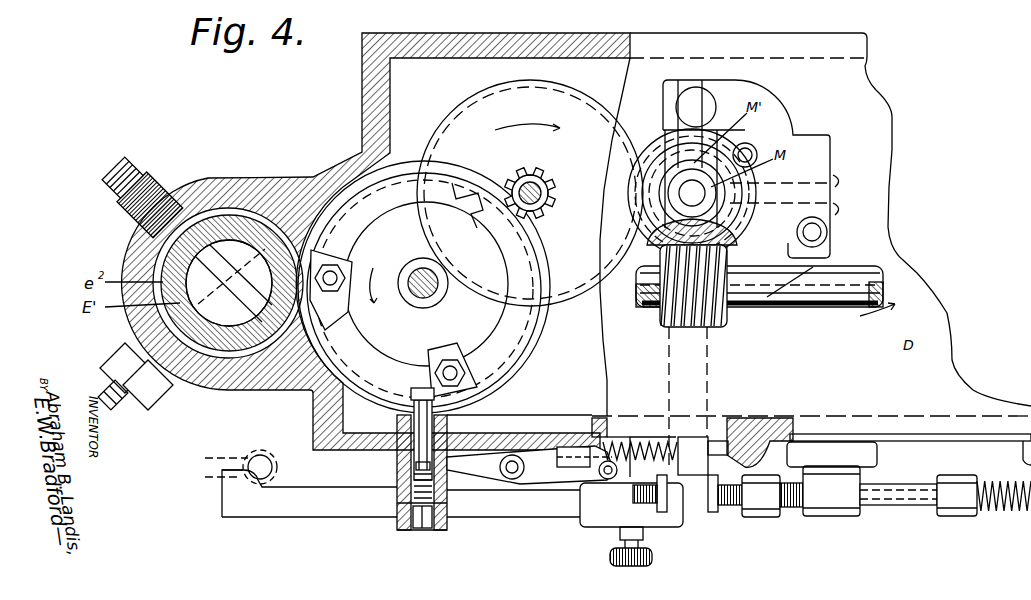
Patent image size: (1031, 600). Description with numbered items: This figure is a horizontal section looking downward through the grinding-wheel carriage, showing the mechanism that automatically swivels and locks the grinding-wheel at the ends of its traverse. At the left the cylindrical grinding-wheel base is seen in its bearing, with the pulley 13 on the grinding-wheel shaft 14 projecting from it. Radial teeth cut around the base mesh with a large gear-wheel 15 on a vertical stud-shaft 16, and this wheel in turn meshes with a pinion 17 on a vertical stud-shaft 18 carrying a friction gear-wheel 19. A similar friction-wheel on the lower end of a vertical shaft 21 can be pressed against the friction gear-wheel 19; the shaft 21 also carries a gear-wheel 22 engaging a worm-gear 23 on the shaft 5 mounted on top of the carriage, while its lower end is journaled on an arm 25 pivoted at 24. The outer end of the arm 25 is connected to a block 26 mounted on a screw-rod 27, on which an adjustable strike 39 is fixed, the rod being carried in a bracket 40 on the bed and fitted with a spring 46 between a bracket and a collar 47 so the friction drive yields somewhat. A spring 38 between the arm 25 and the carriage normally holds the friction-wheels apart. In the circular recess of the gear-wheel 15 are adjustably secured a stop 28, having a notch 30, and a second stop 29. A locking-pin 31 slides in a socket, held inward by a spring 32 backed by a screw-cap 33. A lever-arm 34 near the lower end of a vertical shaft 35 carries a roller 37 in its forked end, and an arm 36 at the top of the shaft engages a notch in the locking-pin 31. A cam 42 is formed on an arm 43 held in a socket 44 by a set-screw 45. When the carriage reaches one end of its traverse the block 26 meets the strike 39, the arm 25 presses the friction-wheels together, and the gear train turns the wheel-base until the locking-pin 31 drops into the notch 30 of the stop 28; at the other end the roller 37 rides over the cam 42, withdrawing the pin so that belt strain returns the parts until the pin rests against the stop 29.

The shaft 5 is at (878, 265).
The pulley 13 is at (160, 172).
The grinding-wheel shaft 14 is at (113, 167).
The gear-wheel 15 is at (443, 292).
The vertical stud-shaft 16 is at (433, 300).
The pinion 17 is at (545, 175).
The vertical stud-shaft 18 is at (541, 197).
The friction gear-wheel 19 is at (577, 108).
The vertical shaft 21 is at (690, 193).
The gear-wheel 22 is at (648, 238).
The worm-gear 23 is at (723, 315).
The pivot 24 is at (692, 113).
The arm 25 is at (845, 386).
The block 26 is at (712, 514).
The screw-rod 27 is at (737, 508).
The stop 28 is at (331, 290).
The stop 29 is at (434, 357).
The notch 30 is at (294, 287).
The locking-pin 31 is at (413, 405).
The spring 32 is at (411, 481).
The screw-cap 33 is at (400, 524).
The lever-arm 34 is at (538, 462).
The vertical shaft 35 is at (512, 455).
The arm 36 is at (409, 465).
The roller 37 is at (620, 478).
The spring 38 is at (640, 437).
The adjustable strike 39 is at (767, 512).
The bracket 40 is at (837, 516).
The cam 42 is at (267, 483).
The arm 43 is at (517, 510).
The socket 44 is at (597, 517).
The set-screw 45 is at (645, 548).
The spring 46 is at (973, 488).
The collar 47 is at (975, 516).